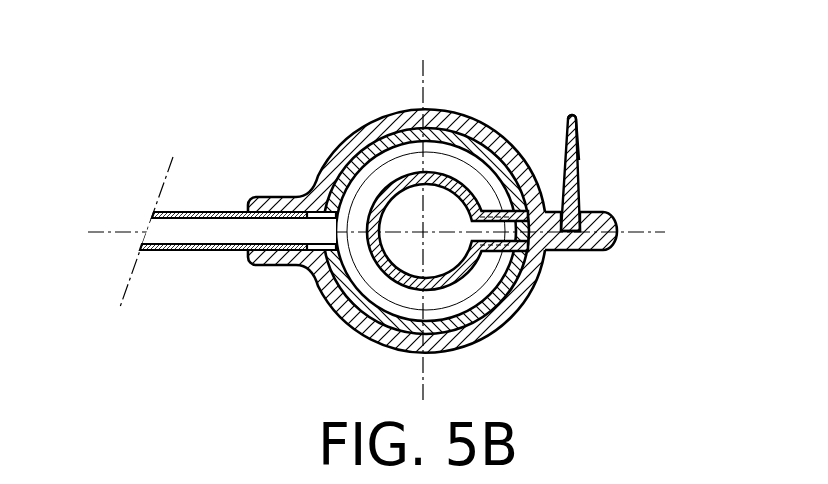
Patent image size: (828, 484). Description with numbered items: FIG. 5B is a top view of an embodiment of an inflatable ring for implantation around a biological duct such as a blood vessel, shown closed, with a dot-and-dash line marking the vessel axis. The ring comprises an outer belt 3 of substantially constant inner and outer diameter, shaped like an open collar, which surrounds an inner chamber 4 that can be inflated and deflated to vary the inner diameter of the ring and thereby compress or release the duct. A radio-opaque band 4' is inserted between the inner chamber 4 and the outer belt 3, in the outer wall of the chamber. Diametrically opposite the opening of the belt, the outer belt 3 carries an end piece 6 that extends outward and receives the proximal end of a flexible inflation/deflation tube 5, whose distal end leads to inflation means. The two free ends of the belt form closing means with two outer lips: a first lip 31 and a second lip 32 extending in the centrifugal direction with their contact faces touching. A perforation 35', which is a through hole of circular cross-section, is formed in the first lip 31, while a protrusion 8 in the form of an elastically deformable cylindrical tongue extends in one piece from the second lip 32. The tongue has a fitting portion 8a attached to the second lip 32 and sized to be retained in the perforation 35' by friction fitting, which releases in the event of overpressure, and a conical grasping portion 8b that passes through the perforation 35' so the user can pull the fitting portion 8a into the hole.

The outer belt 3 is at (340, 316).
The first lip 31 is at (612, 216).
The second lip 32 is at (570, 251).
The perforation 35' is at (592, 178).
The inner chamber 4 is at (419, 184).
The radio-opaque band 4' is at (458, 194).
The inflation/deflation tube 5 is at (208, 251).
The end piece 6 is at (288, 195).
The protrusion 8 is at (612, 121).
The fitting portion 8a is at (581, 192).
The grasping portion 8b is at (576, 157).